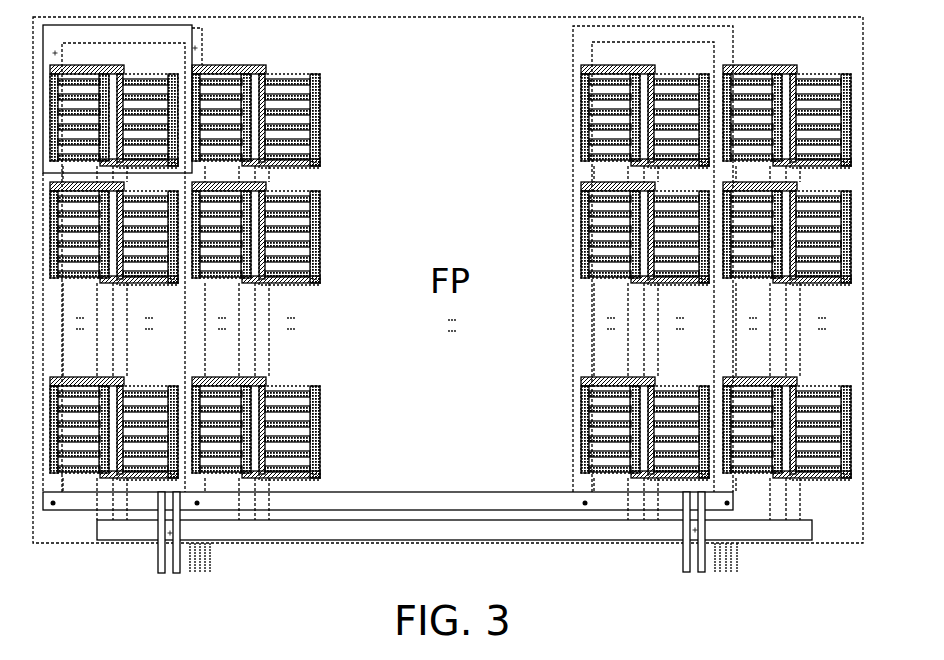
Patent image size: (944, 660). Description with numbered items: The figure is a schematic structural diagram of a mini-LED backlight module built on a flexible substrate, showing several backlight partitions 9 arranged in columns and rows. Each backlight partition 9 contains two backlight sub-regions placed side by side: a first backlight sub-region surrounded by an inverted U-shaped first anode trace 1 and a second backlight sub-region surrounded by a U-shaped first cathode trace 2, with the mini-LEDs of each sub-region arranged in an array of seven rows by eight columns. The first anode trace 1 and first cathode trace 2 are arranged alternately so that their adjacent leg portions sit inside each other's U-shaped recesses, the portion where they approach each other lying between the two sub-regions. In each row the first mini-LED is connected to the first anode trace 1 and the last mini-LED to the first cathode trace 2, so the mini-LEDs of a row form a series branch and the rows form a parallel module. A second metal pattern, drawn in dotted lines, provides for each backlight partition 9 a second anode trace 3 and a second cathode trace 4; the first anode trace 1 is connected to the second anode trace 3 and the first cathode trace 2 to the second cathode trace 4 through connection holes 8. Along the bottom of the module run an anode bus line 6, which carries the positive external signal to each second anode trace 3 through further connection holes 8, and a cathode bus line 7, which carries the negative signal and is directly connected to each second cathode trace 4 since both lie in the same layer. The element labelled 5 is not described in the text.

The first anode trace 1 is at (78, 67).
The first cathode trace 2 is at (133, 168).
The second anode trace 3 is at (202, 38).
The second cathode trace 4 is at (137, 77).
The electrode connecting portion 5 is at (97, 78).
The anode bus line 6 is at (370, 505).
The cathode bus line 7 is at (395, 530).
The connection holes 8 is at (63, 66).
The backlight partition 9 is at (192, 62).